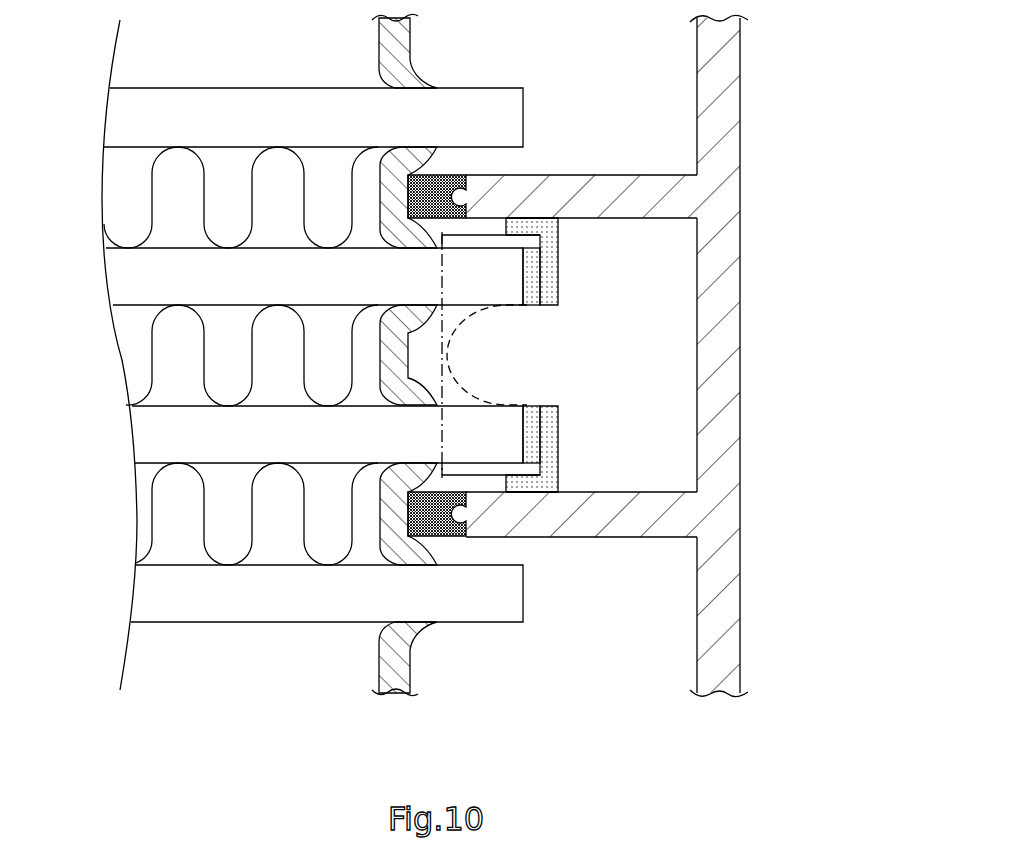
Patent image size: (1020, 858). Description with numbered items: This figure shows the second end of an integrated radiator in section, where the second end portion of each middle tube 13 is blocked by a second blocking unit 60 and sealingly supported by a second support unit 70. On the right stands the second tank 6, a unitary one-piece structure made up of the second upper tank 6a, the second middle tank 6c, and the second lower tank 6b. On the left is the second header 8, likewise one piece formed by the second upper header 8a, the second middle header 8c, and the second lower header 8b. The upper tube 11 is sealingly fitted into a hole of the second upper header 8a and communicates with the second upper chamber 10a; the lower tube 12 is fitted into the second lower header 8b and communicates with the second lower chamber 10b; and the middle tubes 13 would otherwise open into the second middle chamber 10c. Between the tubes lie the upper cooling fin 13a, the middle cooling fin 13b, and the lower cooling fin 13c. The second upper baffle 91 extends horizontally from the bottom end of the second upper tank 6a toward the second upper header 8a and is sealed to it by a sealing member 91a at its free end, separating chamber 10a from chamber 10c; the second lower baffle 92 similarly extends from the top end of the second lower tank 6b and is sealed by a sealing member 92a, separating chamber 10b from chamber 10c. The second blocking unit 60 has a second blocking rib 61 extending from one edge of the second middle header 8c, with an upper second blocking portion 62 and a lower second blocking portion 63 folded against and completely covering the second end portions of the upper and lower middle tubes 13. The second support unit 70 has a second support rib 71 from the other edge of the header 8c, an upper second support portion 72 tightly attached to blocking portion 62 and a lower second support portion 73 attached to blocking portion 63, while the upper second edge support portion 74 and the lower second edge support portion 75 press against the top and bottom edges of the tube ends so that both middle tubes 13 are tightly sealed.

The second tank 6 is at (757, 355).
The second upper tank 6a is at (740, 93).
The second lower tank 6b is at (740, 612).
The second middle tank 6c is at (740, 350).
The second header 8 is at (271, 355).
The second upper header 8a is at (397, 40).
The second lower header 8b is at (400, 668).
The second middle header 8c is at (380, 356).
The second upper chamber 10a is at (634, 104).
The second lower chamber 10b is at (634, 631).
The second middle chamber 10c is at (673, 391).
The upper tube 11 is at (143, 118).
The lower tube 12 is at (143, 595).
The middle tube 13 is at (143, 272).
The upper cooling fin 13a is at (153, 197).
The middle cooling fin 13b is at (152, 355).
The lower cooling fin 13c is at (152, 515).
The second blocking unit 60 is at (534, 355).
The second blocking rib 61 is at (506, 355).
The upper second blocking portion 62 is at (535, 272).
The lower second blocking portion 63 is at (535, 437).
The second support unit 70 is at (582, 360).
The second support rib 71 is at (447, 355).
The upper second support portion 72 is at (558, 240).
The lower second support portion 73 is at (558, 470).
The upper second edge support portion 74 is at (533, 218).
The lower second edge support portion 75 is at (535, 494).
The second upper baffle 91 is at (612, 202).
The sealing member 91a is at (437, 190).
The second lower baffle 92 is at (612, 515).
The sealing member 92a is at (437, 523).